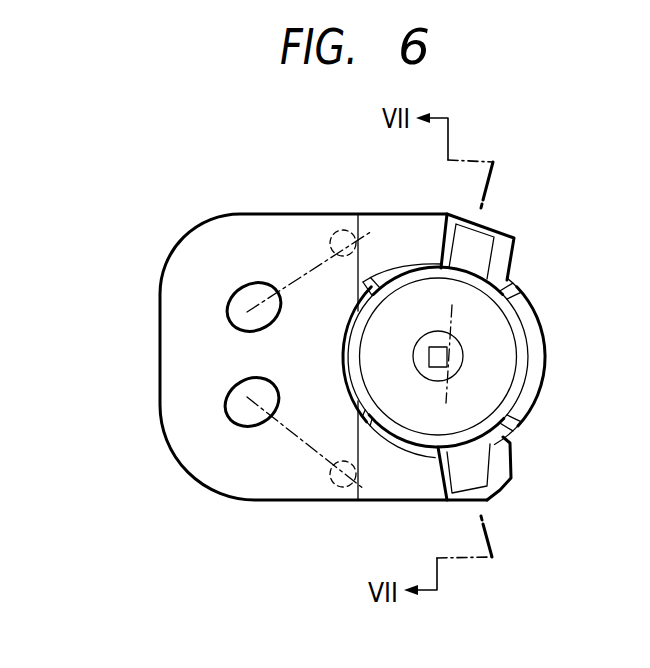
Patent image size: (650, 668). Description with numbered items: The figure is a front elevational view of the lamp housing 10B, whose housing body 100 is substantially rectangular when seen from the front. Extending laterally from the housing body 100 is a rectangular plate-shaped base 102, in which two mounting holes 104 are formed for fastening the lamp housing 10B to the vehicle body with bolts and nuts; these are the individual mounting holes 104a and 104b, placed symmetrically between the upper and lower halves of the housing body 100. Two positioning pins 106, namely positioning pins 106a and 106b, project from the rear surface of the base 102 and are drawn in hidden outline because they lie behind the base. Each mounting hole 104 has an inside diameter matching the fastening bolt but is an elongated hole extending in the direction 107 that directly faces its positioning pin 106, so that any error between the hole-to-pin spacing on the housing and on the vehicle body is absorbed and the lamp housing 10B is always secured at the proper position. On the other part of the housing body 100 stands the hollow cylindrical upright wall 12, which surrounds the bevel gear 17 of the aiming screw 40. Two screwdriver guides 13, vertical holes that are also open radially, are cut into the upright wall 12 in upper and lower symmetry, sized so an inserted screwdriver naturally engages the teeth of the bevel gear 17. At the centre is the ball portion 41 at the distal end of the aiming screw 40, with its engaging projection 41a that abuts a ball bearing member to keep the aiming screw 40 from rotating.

The lamp housing 10B is at (276, 315).
The housing body 100 is at (276, 315).
The base 102 is at (160, 387).
The mounting hole 104 is at (152, 392).
The mounting hole 104a is at (223, 410).
The mounting hole 104b is at (229, 312).
The positioning pin 106 is at (333, 363).
The positioning pin 106a is at (343, 487).
The positioning pin 106b is at (343, 230).
The direction of elongation 107 is at (250, 233).
The upright wall 12 is at (547, 331).
The screwdriver guide 13 is at (490, 233).
The bevel gear 17 is at (413, 419).
The aiming screw 40 is at (526, 374).
The ball portion 41 is at (457, 372).
The engaging projection 41a is at (447, 355).